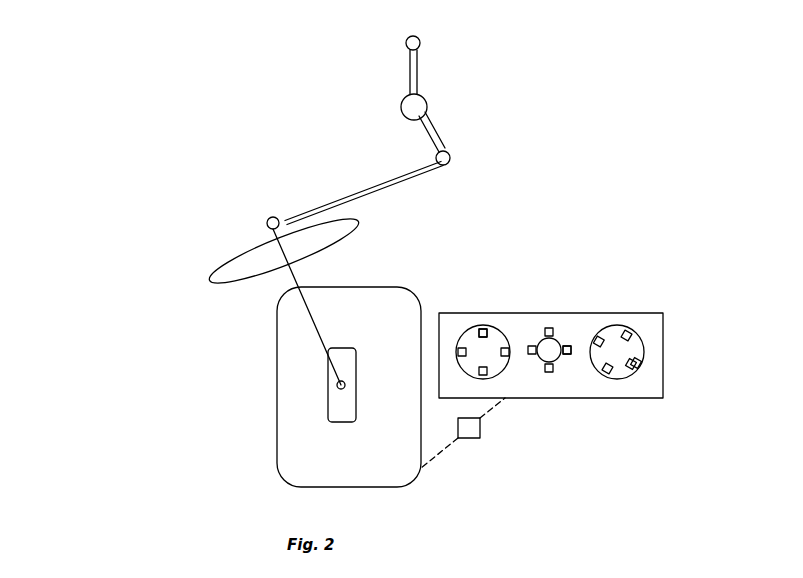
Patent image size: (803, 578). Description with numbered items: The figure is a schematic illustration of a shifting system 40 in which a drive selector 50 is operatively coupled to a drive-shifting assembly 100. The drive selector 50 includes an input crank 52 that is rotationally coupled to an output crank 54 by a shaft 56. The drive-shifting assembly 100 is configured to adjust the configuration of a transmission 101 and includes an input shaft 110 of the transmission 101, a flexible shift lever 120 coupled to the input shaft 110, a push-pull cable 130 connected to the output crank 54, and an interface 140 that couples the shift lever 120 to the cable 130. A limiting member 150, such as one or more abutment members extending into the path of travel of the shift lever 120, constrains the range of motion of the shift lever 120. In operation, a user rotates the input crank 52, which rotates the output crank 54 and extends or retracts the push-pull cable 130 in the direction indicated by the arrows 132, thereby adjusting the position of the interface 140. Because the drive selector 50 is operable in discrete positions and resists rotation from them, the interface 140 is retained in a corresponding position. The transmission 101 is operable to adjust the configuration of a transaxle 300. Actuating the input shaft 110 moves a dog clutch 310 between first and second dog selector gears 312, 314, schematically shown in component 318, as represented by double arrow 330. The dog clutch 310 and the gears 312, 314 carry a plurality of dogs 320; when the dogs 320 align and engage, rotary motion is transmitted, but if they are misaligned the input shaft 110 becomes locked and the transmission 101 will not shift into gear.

The shifting system 40 is at (118, 46).
The drive selector 50 is at (289, 58).
The input crank 52 is at (420, 55).
The output crank 54 is at (438, 134).
The shaft 56 is at (400, 107).
The drive-shifting assembly 100 is at (134, 166).
The transmission 101 is at (252, 420).
The input shaft 110 is at (345, 422).
The flexible shift lever 120 is at (290, 280).
The push-pull cable 130 is at (322, 204).
The arrows 132 is at (430, 177).
The interface 140 is at (266, 223).
The limiting member 150 is at (360, 226).
The transaxle 300 is at (470, 440).
The dog clutch 310 is at (552, 346).
The first dog selector gear 312 is at (490, 345).
The second dog selector gear 314 is at (619, 340).
The component 318 is at (663, 345).
The dogs 320 is at (483, 332).
The double arrow 330 is at (513, 375).